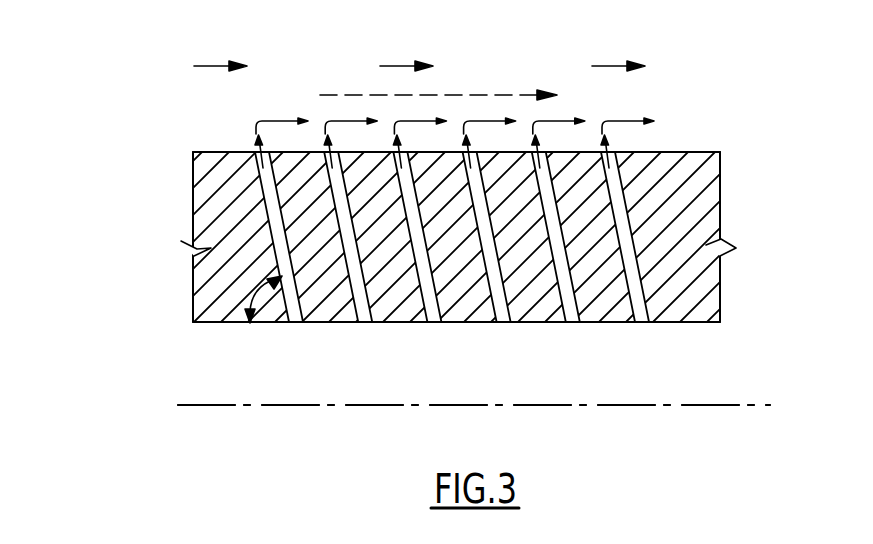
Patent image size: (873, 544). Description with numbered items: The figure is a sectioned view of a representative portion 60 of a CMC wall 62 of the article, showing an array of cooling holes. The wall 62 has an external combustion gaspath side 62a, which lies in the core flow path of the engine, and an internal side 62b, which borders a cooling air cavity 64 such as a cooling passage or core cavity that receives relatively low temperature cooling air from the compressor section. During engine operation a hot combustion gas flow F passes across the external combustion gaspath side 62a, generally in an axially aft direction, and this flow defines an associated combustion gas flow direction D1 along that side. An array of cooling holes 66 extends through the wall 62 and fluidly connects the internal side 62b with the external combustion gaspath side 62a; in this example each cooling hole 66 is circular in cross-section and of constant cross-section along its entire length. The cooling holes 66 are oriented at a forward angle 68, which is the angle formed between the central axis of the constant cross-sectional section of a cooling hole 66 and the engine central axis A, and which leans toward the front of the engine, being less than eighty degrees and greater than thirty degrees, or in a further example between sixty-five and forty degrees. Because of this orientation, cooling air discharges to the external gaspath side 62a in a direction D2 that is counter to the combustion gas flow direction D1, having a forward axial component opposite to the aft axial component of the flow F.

The panel assembly 60 is at (452, 282).
The wall 62 is at (712, 192).
The external combustion gaspath side 62a is at (671, 152).
The internal side 62b is at (682, 323).
The cooling air cavity 64 is at (527, 379).
The cooling holes 66 is at (458, 293).
The forward angle 68 is at (252, 292).
The engine central axis A is at (474, 436).
The hot combustion gas flow F is at (213, 66).
The combustion gas flow direction D1 is at (482, 95).
The cooling air discharge direction D2 is at (395, 148).